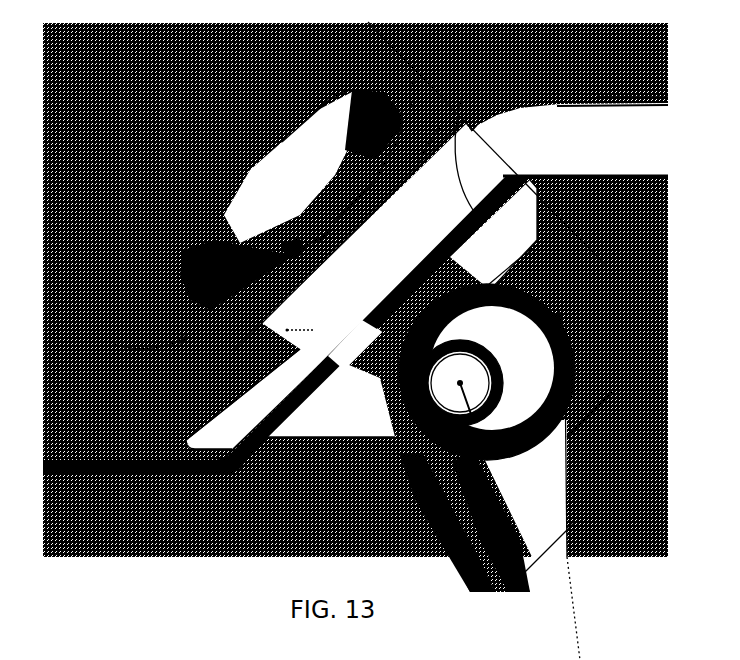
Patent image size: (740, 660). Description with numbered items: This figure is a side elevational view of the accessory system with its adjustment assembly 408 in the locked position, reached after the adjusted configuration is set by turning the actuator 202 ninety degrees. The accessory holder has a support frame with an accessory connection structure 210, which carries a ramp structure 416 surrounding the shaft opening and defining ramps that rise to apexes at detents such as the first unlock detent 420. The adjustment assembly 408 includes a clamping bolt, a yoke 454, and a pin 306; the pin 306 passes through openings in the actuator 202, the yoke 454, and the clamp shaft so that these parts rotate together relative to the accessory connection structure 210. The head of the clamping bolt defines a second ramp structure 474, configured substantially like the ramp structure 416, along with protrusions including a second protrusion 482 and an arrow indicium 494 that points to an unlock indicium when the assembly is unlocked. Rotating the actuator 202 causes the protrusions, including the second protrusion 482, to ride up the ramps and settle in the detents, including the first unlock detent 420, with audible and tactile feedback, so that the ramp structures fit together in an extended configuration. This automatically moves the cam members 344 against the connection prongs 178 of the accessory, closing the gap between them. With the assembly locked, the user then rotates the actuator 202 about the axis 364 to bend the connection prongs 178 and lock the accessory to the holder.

The connection prongs 178 is at (458, 85).
The actuator 202 is at (460, 517).
The accessory connection structure 210 is at (217, 427).
The pin 306 is at (477, 365).
The cam members 344 is at (483, 298).
The axis 364 is at (478, 412).
The adjustment assembly 408 is at (196, 335).
The ramp structure 416 is at (441, 145).
The first unlock detent 420 is at (327, 226).
The yoke 454 is at (315, 428).
The ramp structure 474 is at (487, 144).
The second protrusion 482 is at (323, 233).
The arrow indicium 494 is at (343, 90).